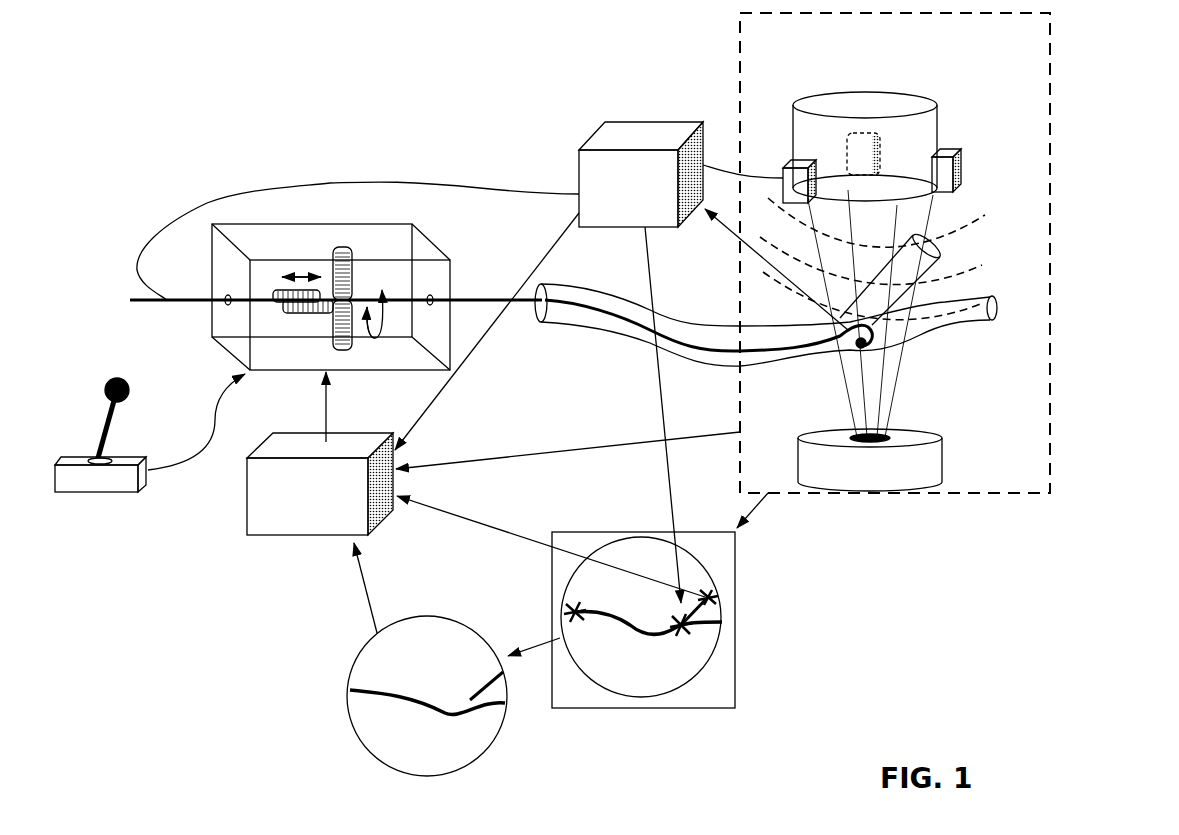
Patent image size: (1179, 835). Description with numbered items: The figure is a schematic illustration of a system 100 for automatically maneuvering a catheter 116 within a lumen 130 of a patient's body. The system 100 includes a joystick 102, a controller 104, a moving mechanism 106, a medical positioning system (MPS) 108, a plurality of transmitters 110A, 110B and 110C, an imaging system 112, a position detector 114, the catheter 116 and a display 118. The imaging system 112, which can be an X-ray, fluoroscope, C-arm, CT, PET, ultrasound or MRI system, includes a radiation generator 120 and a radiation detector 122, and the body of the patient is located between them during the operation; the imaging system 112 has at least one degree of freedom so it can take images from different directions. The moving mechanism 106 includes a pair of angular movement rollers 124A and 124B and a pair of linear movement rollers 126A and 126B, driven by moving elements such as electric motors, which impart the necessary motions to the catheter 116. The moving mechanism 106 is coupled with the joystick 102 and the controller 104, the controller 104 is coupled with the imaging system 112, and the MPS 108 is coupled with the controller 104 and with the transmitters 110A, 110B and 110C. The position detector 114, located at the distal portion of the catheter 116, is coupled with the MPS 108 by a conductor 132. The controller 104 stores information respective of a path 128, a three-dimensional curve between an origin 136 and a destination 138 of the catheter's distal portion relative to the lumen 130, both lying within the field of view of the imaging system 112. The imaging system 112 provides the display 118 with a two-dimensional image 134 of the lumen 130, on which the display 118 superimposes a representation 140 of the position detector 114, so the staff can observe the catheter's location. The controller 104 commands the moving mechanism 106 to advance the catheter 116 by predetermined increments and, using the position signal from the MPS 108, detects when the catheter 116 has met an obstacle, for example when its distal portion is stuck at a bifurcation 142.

The system 100 is at (390, 95).
The joystick 102 is at (115, 380).
The controller 104 is at (273, 538).
The moving mechanism 106 is at (432, 247).
The medical positioning system (MPS) 108 is at (640, 130).
The transmitter 110A is at (783, 165).
The transmitter 110B is at (866, 135).
The transmitter 110C is at (955, 150).
The imaging system 112 is at (1052, 22).
The position detector 114 is at (889, 341).
The catheter 116 is at (520, 327).
The display 118 is at (603, 535).
The radiation generator 120 is at (905, 485).
The radiation detector 122 is at (935, 101).
The angular movement roller 124A is at (352, 350).
The angular movement roller 124B is at (342, 247).
The linear movement roller 126A is at (300, 315).
The linear movement roller 126B is at (275, 288).
The path 128 is at (380, 690).
The lumen 130 is at (675, 355).
The conductor 132 is at (382, 182).
The two-dimensional image 134 is at (627, 627).
The origin 136 is at (556, 340).
The destination 138 is at (942, 224).
The representation 140 is at (684, 632).
The bifurcation 142 is at (890, 353).